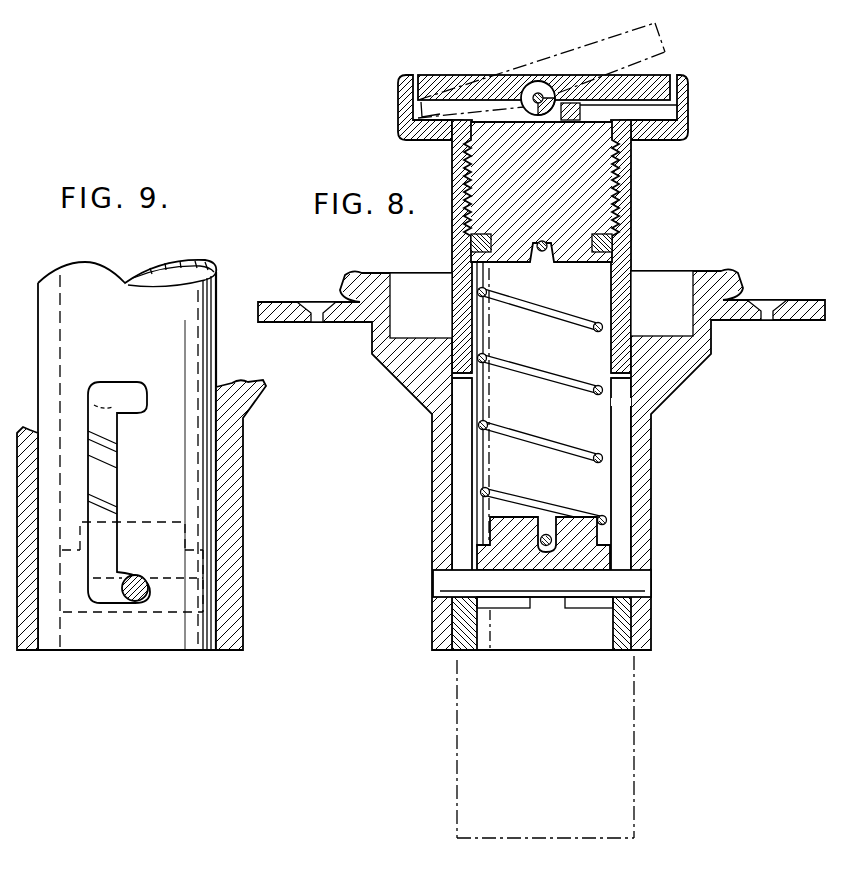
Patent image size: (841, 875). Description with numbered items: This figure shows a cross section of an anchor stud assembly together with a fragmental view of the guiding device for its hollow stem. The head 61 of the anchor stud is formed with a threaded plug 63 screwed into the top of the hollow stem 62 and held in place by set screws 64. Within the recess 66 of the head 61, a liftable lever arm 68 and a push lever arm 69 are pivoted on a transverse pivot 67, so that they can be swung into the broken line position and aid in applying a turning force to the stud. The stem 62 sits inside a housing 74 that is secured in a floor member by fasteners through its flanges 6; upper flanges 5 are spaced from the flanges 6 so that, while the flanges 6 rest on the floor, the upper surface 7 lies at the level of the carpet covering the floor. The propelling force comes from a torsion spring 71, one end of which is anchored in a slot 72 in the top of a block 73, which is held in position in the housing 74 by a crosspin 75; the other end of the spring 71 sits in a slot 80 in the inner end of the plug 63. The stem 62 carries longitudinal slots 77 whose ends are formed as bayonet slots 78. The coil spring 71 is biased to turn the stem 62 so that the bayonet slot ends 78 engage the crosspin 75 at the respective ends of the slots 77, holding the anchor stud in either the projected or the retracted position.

In FIG. 8, the upper flanges 5 is at (740, 274).
In FIG. 8, the flanges 6 is at (795, 306).
In FIG. 8, the upper surface 7 is at (717, 274).
In FIG. 8, the head 61 is at (688, 124).
In FIG. 8, the hollow stem 62 is at (632, 235).
In FIG. 9, the hollow stem 62 is at (212, 354).
In FIG. 8, the threaded plug 63 is at (614, 203).
In FIG. 8, the set screws 64 is at (625, 118).
In FIG. 8, the recess 66 is at (688, 108).
In FIG. 8, the transverse pivot 67 is at (536, 93).
In FIG. 8, the liftable lever arm 68 is at (660, 34).
In FIG. 8, the push lever arm 69 is at (462, 77).
In FIG. 8, the torsion spring 71 is at (503, 432).
In FIG. 9, the torsion spring 71 is at (110, 461).
In FIG. 8, the slot 72 is at (545, 516).
In FIG. 8, the block 73 is at (497, 552).
In FIG. 9, the block 73 is at (222, 563).
In FIG. 8, the housing 74 is at (648, 517).
In FIG. 9, the housing 74 is at (226, 472).
In FIG. 8, the crosspin 75 is at (640, 586).
In FIG. 9, the crosspin 75 is at (137, 582).
In FIG. 8, the longitudinal slots 77 is at (622, 450).
In FIG. 9, the longitudinal slots 77 is at (116, 514).
In FIG. 8, the bayonet slots 78 is at (615, 405).
In FIG. 9, the bayonet slots 78 is at (128, 390).
In FIG. 8, the slot 80 is at (548, 268).